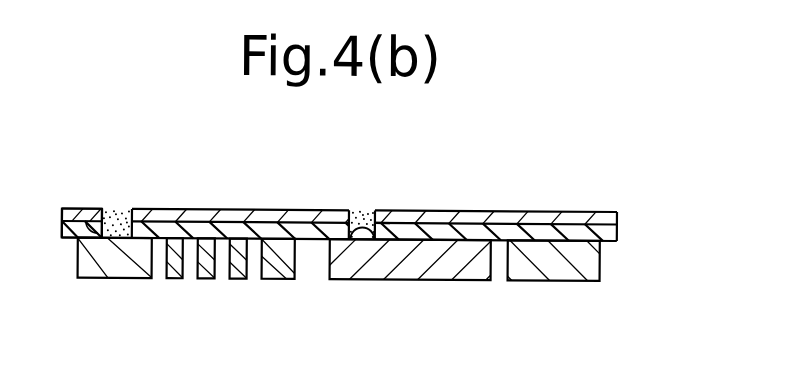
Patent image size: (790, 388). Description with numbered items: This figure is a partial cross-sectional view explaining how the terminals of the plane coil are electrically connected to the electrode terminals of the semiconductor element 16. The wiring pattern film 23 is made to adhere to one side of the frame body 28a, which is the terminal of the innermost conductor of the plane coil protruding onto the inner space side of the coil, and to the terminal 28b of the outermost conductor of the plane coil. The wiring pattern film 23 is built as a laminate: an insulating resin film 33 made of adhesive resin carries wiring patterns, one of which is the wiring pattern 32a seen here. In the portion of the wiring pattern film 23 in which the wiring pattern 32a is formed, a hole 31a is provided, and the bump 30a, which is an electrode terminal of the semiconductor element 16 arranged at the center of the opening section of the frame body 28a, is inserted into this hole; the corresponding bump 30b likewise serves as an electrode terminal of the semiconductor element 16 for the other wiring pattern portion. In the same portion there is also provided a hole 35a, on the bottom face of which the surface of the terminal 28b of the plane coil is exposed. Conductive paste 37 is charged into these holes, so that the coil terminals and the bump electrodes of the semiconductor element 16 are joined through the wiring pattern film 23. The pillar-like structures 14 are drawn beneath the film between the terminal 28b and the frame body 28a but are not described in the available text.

The pillar / bump electrode 14 is at (207, 261).
The semiconductor element 16 is at (408, 263).
The wiring pattern film 23 is at (661, 169).
The frame body 28a is at (276, 261).
The terminal 28b is at (112, 260).
The bump 30a is at (360, 224).
The bump 30b is at (362, 233).
The hole 31a is at (384, 221).
The wiring pattern 32a is at (619, 208).
The insulating resin film 33 is at (617, 229).
The hole 35a is at (87, 208).
The conductive paste 37 is at (115, 209).